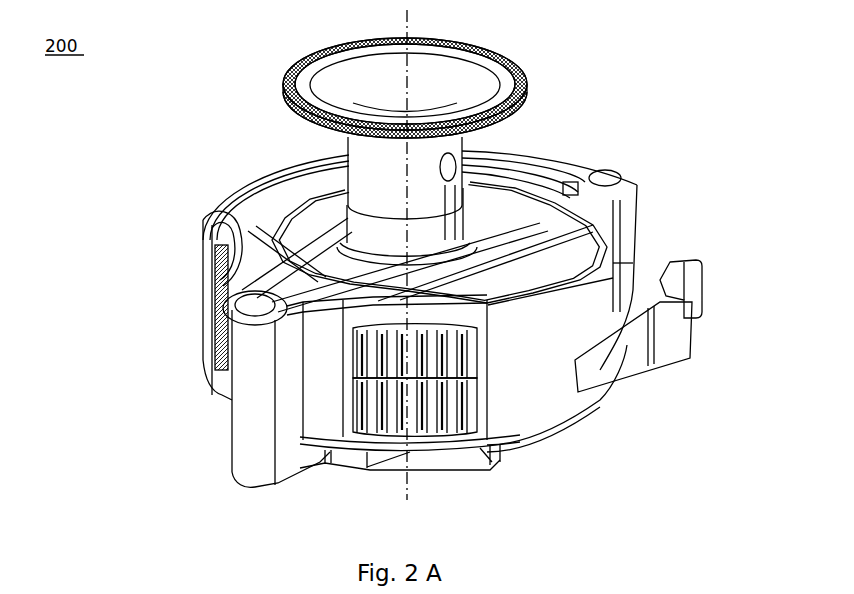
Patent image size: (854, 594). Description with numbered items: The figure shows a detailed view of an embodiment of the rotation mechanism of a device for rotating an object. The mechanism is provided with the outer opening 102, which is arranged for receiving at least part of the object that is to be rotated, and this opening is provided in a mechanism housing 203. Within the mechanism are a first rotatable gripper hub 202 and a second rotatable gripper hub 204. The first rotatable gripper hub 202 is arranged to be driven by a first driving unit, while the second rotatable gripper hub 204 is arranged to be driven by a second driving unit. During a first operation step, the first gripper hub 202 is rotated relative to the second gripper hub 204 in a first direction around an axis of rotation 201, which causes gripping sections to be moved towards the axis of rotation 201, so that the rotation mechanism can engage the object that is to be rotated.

The outer opening 102 is at (438, 90).
The axis of rotation 201 is at (420, 315).
The first rotatable gripper hub 202 is at (380, 347).
The mechanism housing 203 is at (545, 340).
The second rotatable gripper hub 204 is at (380, 402).